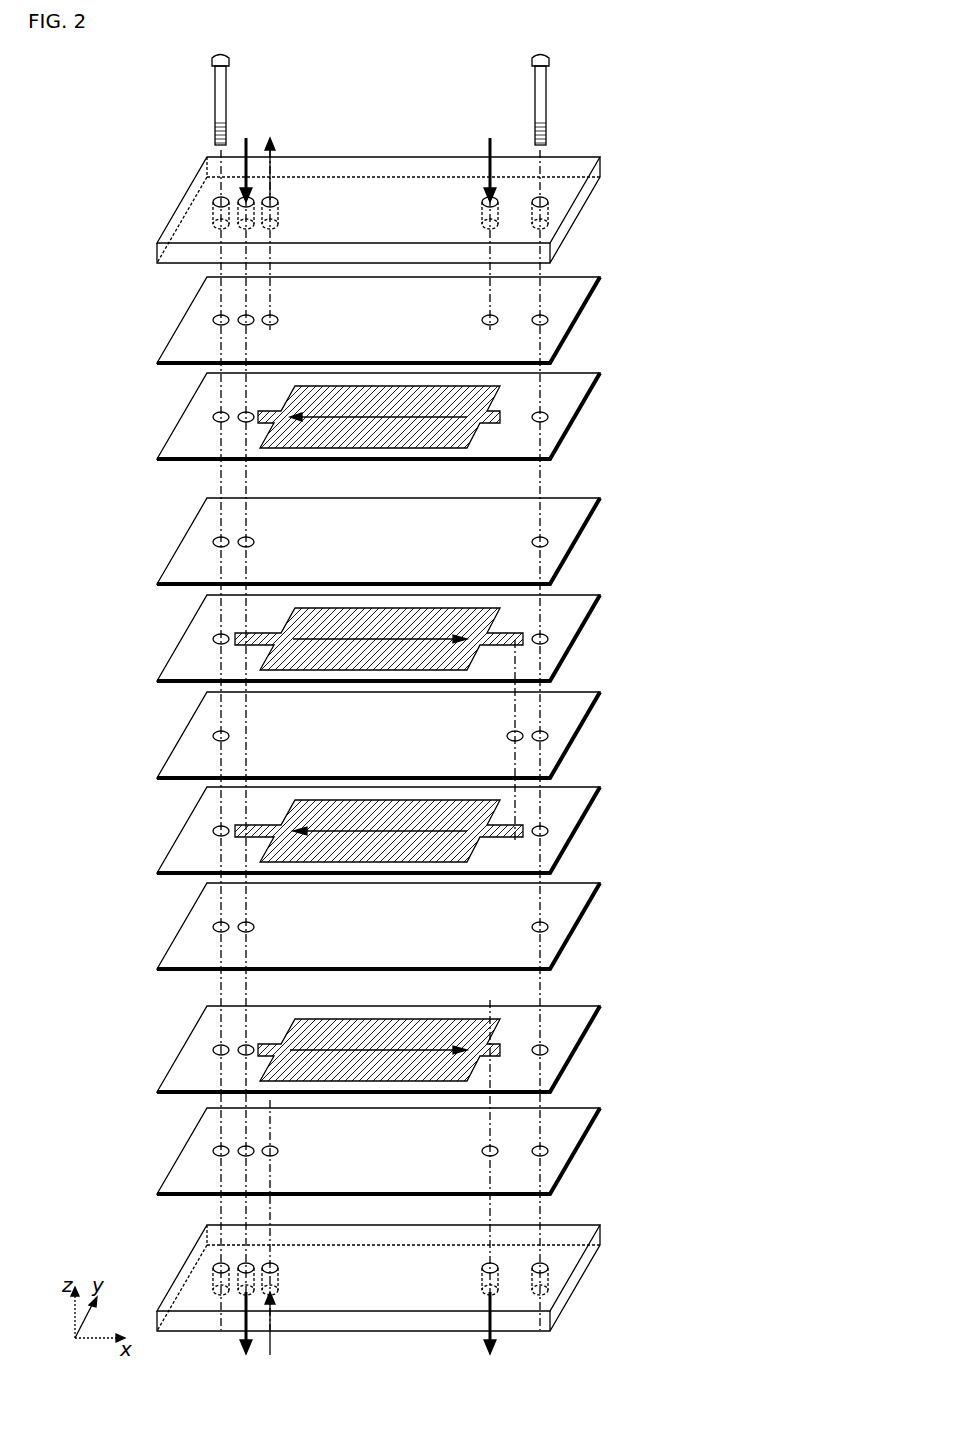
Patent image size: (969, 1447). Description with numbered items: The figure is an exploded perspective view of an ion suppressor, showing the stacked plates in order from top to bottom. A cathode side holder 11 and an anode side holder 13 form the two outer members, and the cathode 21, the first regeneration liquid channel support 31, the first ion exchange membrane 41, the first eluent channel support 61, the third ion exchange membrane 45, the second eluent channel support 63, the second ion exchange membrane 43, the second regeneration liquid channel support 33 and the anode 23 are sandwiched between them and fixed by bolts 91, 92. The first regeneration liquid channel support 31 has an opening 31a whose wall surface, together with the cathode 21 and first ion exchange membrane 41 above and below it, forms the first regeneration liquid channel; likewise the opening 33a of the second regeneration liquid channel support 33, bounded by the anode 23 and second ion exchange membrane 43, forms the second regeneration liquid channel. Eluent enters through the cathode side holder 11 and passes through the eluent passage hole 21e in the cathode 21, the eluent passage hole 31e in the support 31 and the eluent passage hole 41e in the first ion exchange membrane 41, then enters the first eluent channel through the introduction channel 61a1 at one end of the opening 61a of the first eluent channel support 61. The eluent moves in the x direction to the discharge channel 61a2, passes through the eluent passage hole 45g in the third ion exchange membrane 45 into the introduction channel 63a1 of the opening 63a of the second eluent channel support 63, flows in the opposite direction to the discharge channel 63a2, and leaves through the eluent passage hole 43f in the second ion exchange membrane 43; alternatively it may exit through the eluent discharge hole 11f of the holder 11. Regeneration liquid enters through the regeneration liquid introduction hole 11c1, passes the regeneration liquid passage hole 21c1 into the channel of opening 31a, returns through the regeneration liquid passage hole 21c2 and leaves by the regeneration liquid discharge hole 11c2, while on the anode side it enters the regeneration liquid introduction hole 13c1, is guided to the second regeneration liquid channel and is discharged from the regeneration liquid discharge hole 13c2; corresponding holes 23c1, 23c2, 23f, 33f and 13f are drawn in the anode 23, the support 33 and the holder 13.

The cathode side holder 11 is at (410, 189).
The regeneration liquid introduction hole 11c1 is at (483, 201).
The regeneration liquid discharge hole 11c2 is at (280, 202).
The eluent discharge hole 11f is at (522, 198).
The anode side holder 13 is at (388, 1277).
The regeneration liquid introduction hole 13c1 is at (280, 1268).
The regeneration liquid discharge hole 13c2 is at (482, 1268).
The fixing hole of lower end plate 13f is at (238, 1265).
The cathode 21 is at (388, 319).
The regeneration liquid passage hole 21c1 is at (482, 321).
The regeneration liquid passage hole 21c2 is at (280, 321).
The eluent passage hole 21e is at (238, 318).
The anode 23 is at (386, 1151).
The first through hole of second frame plate 23c1 is at (280, 1152).
The second through hole of second frame plate 23c2 is at (482, 1152).
The fixing hole of second frame plate 23f is at (238, 1150).
The first regeneration liquid channel support 31 is at (388, 405).
The opening 31a is at (472, 402).
The eluent passage hole 31e is at (238, 415).
The second regeneration liquid channel support 33 is at (385, 1040).
The opening 33a is at (308, 1035).
The fixing hole of second channel plate 33f is at (238, 1048).
The first ion exchange membrane 41 is at (388, 540).
The eluent passage hole 41e is at (238, 540).
The second ion exchange membrane 43 is at (410, 926).
The eluent passage hole 43f is at (255, 926).
The third ion exchange membrane 45 is at (410, 735).
The eluent passage hole 45g is at (508, 735).
The first eluent channel support 61 is at (398, 625).
The opening 61a is at (313, 620).
The introduction channel 61a1 is at (265, 635).
The discharge channel 61a2 is at (494, 636).
The second eluent channel support 63 is at (397, 817).
The opening 63a is at (313, 812).
The introduction channel 63a1 is at (494, 829).
The discharge channel 63a2 is at (265, 827).
The bolt 91 is at (223, 92).
The bolt 92 is at (543, 92).